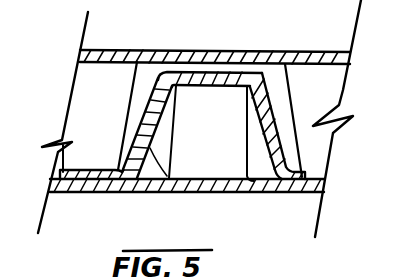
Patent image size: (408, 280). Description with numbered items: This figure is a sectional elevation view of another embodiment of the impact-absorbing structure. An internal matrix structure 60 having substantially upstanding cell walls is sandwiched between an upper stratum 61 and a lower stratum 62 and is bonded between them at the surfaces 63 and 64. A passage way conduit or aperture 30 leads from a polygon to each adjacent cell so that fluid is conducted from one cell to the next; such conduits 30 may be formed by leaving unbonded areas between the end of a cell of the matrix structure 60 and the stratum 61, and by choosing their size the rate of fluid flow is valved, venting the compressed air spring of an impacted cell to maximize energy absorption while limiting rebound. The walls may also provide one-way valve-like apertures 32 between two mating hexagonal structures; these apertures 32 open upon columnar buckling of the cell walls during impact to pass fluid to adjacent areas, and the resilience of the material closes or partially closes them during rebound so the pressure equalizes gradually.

The passage way conduit or aperture 30 is at (196, 67).
The one-way valve-like aperture 32 is at (162, 195).
The internal matrix structure 60 is at (150, 112).
The upper stratum 61 is at (229, 50).
The lower stratum 62 is at (236, 197).
The bonding surface 63 is at (84, 194).
The bonding surface 64 is at (306, 197).